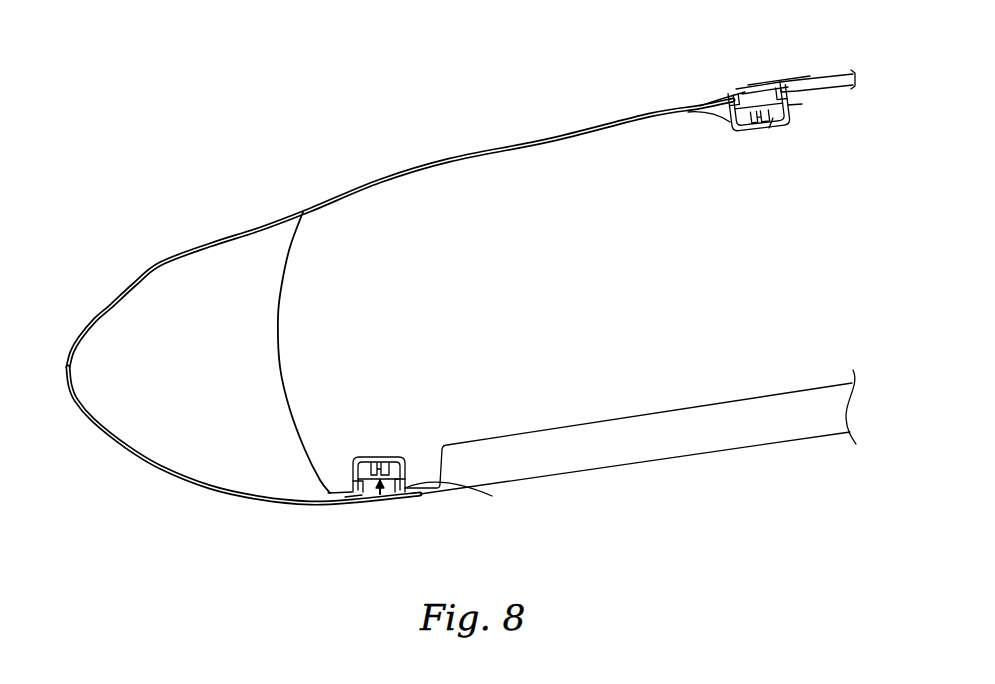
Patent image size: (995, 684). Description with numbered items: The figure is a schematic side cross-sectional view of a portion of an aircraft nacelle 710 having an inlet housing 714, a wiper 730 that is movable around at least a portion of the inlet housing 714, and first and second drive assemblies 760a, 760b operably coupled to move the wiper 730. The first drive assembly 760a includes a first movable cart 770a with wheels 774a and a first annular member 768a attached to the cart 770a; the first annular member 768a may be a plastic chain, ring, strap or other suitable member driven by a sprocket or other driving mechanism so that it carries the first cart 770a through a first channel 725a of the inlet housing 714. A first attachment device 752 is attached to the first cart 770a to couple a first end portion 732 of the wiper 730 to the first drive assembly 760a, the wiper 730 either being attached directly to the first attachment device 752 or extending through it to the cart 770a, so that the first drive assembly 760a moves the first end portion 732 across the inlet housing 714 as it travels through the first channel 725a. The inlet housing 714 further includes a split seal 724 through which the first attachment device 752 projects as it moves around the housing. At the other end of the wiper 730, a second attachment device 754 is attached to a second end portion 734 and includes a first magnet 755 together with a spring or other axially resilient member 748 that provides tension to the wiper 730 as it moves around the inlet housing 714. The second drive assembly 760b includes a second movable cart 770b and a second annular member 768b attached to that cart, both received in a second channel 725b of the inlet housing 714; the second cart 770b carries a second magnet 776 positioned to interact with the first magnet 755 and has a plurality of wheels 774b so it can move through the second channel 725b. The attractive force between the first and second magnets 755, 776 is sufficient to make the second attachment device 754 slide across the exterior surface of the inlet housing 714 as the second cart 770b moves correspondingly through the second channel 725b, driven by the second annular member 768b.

The aircraft nacelle 710 is at (280, 135).
The inlet housing 714 is at (210, 246).
The wiper 730 is at (117, 296).
The second magnet 776 is at (725, 121).
The wheels 774a is at (327, 488).
The wheels 774b is at (690, 108).
The first drive assembly 760a is at (391, 436).
The second drive assembly 760b is at (733, 156).
The first movable cart 770a is at (352, 478).
The second movable cart 770b is at (759, 108).
The first annular member 768a is at (408, 468).
The second annular member 768b is at (759, 116).
The first channel 725a is at (444, 445).
The second channel 725b is at (777, 128).
The split seal 724 is at (392, 501).
The first attachment device 752 is at (383, 503).
The first end portion 732 is at (357, 506).
The second end portion 734 is at (722, 93).
The second attachment device 754 is at (738, 90).
The first magnet 755 is at (770, 85).
The axially resilient member 748 is at (796, 80).